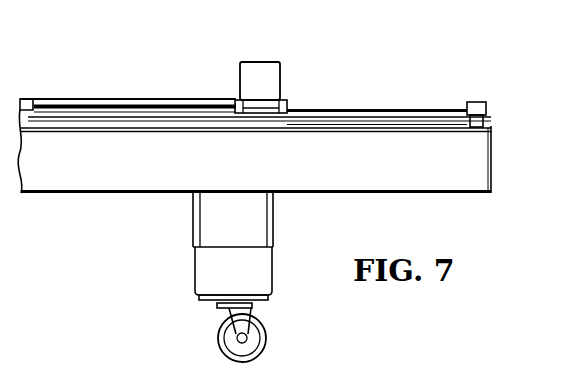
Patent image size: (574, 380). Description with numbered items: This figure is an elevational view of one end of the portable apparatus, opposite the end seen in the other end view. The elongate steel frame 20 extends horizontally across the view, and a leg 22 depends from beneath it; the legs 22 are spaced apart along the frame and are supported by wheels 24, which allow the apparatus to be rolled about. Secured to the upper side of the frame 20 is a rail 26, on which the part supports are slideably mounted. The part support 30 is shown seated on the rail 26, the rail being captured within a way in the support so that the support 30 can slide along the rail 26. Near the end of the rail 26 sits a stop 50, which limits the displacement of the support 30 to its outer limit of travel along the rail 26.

The frame 20 is at (113, 178).
The legs 22 is at (243, 227).
The wheels 24 is at (257, 335).
The rail 26 is at (128, 110).
The part support 30 is at (262, 78).
The stop 50 is at (475, 105).